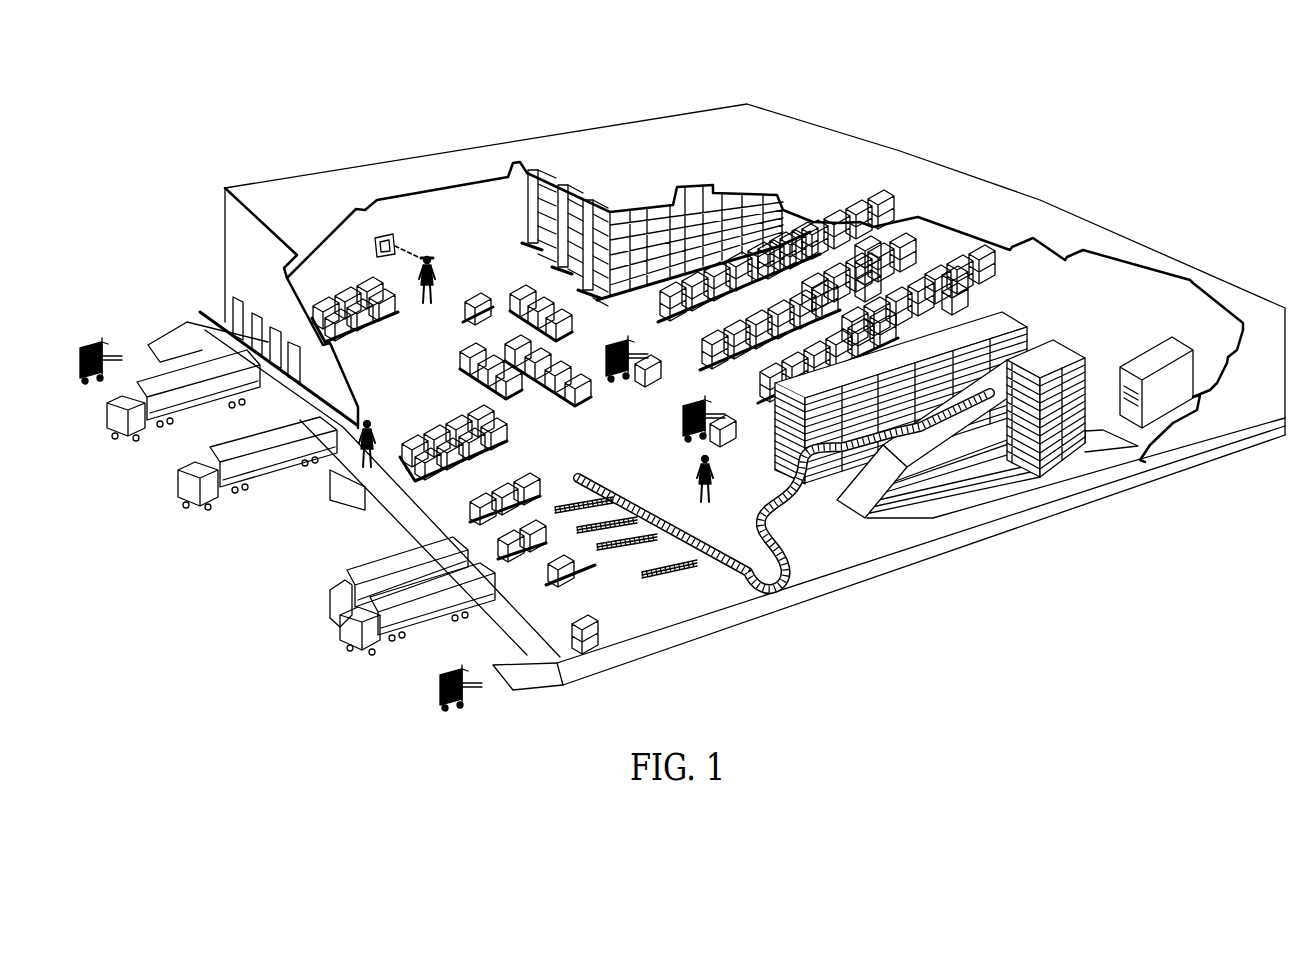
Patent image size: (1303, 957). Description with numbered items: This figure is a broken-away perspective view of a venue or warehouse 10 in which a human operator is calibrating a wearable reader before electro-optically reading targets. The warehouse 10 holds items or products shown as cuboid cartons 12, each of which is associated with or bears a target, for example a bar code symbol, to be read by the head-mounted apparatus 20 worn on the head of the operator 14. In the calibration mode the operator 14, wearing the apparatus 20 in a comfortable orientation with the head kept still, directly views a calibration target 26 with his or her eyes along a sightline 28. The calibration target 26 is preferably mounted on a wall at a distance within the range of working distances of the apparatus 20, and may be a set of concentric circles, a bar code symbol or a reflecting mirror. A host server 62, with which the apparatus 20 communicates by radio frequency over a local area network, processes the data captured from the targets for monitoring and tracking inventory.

The warehouse 10 is at (926, 151).
The cuboid cartons 12 is at (470, 318).
The operator 14 is at (436, 270).
The head-mounted apparatus 20 is at (423, 257).
The calibration target 26 is at (373, 245).
The sightline 28 is at (397, 248).
The host server 62 is at (1150, 352).